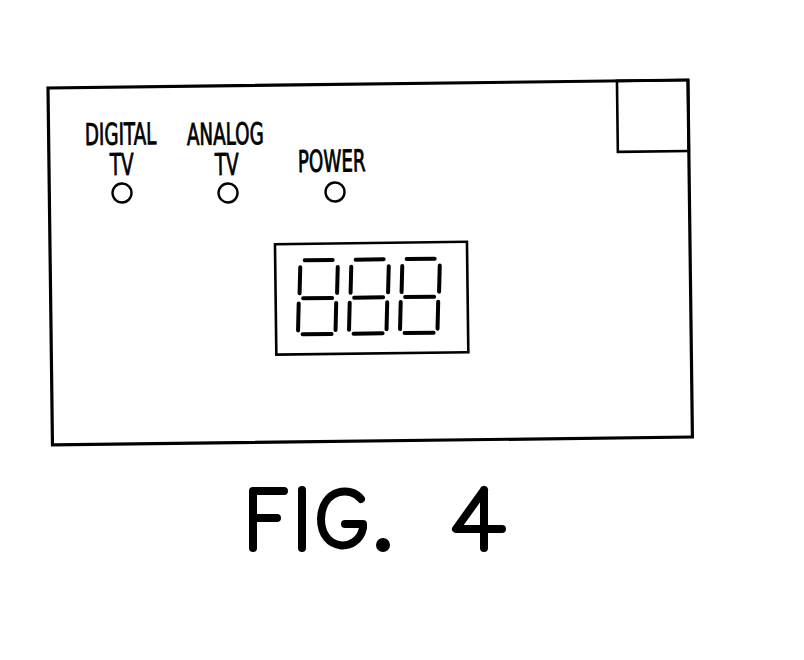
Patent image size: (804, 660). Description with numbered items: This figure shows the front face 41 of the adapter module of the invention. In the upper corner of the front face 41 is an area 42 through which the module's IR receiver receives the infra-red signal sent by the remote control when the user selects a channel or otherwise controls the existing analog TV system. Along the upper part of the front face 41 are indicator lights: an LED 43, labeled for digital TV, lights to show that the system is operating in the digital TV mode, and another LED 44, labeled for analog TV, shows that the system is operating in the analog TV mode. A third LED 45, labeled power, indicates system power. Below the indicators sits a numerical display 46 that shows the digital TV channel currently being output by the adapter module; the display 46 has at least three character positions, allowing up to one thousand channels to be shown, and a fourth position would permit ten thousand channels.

The front face 41 is at (547, 463).
The area 42 is at (638, 94).
The LED 43 is at (120, 205).
The LED 44 is at (227, 206).
The power indicator light 45 is at (334, 207).
The numerical display 46 is at (430, 255).